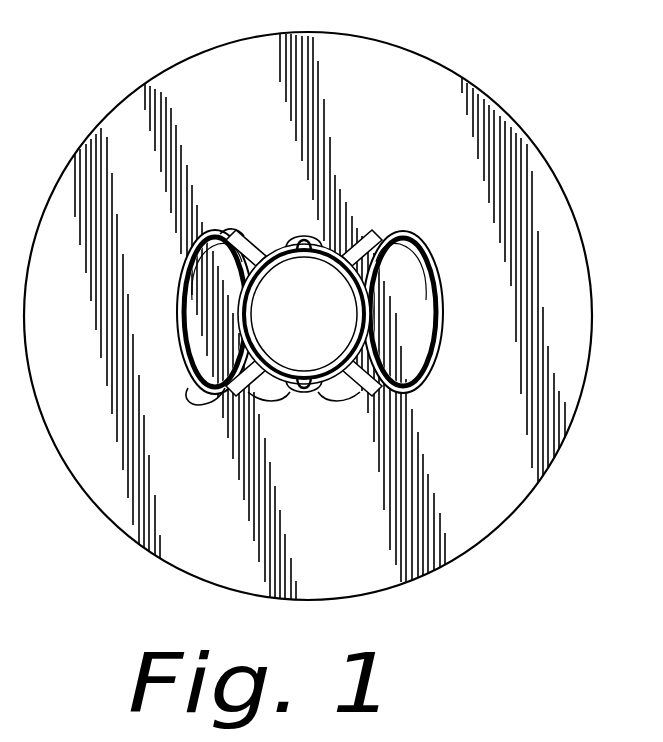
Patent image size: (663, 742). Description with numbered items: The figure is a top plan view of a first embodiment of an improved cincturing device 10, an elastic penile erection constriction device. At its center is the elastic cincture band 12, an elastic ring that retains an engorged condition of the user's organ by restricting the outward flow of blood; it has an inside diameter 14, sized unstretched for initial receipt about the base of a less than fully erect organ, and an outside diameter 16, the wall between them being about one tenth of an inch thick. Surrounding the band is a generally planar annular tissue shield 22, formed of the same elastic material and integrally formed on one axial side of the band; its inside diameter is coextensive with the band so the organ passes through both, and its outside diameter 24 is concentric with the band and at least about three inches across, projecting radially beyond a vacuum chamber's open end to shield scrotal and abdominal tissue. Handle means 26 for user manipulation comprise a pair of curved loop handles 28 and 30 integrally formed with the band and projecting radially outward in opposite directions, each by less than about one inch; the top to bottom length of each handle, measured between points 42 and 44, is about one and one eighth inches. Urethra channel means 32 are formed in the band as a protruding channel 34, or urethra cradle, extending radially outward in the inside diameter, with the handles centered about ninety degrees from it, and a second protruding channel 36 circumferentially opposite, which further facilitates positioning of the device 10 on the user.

The improved cincturing device 10 is at (392, 316).
The elastic cincture band 12 is at (304, 312).
The inside diameter 14 is at (262, 306).
The outside diameter 16 is at (240, 234).
The tissue shield 22 is at (490, 436).
The outside diameter of tissue shield 24 is at (494, 530).
The handle means 26 is at (370, 401).
The curved loop handle 28 is at (396, 233).
The curved loop handle 30 is at (190, 384).
The urethra channel means 32 is at (288, 396).
The protruding channel 34 is at (300, 384).
The second protruding channel 36 is at (304, 243).
The handle end point 42 is at (256, 190).
The handle end point 44 is at (224, 398).